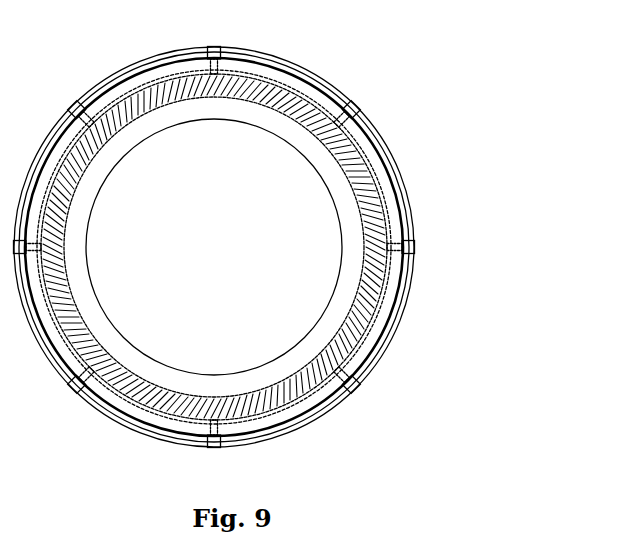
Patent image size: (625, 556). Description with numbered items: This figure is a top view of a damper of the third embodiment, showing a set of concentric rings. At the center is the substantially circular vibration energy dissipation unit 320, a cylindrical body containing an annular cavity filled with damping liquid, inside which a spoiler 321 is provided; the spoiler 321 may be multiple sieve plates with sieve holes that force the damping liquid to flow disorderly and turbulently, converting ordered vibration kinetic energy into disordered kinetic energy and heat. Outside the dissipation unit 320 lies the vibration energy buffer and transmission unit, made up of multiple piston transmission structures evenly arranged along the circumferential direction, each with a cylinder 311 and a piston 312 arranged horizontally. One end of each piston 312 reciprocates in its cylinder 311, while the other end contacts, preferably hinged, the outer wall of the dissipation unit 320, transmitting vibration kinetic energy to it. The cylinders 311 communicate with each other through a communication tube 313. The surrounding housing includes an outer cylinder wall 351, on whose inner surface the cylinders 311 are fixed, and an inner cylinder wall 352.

The outer cylinder wall 351 is at (327, 82).
The inner cylinder wall 352 is at (276, 134).
The vibration energy dissipation unit 320 is at (367, 162).
The spoiler 321 is at (380, 298).
The communication tube 313 is at (410, 207).
The cylinder 311 is at (411, 247).
The piston 312 is at (396, 250).